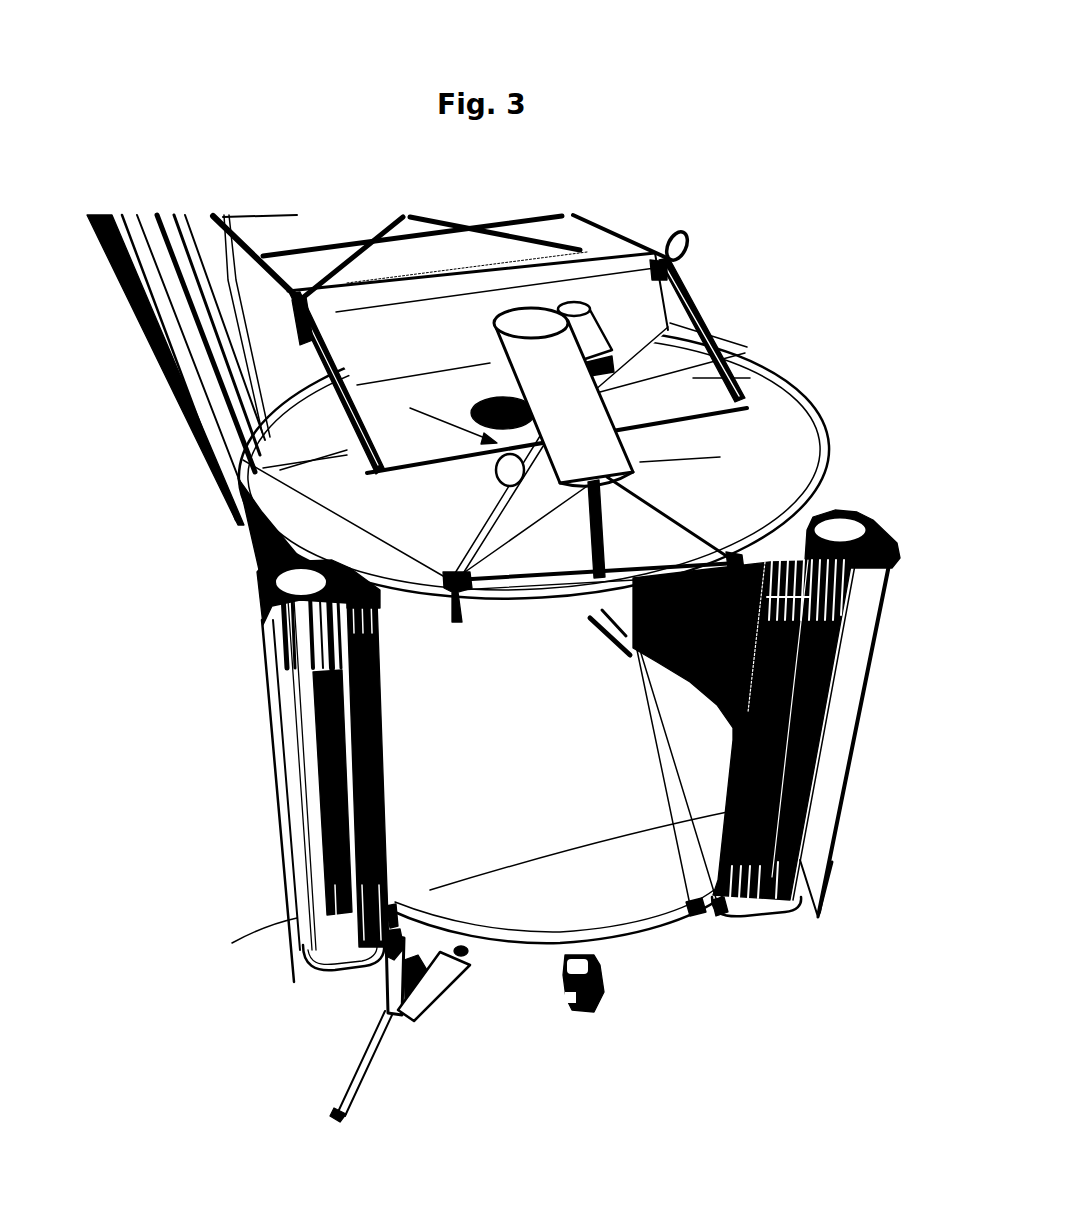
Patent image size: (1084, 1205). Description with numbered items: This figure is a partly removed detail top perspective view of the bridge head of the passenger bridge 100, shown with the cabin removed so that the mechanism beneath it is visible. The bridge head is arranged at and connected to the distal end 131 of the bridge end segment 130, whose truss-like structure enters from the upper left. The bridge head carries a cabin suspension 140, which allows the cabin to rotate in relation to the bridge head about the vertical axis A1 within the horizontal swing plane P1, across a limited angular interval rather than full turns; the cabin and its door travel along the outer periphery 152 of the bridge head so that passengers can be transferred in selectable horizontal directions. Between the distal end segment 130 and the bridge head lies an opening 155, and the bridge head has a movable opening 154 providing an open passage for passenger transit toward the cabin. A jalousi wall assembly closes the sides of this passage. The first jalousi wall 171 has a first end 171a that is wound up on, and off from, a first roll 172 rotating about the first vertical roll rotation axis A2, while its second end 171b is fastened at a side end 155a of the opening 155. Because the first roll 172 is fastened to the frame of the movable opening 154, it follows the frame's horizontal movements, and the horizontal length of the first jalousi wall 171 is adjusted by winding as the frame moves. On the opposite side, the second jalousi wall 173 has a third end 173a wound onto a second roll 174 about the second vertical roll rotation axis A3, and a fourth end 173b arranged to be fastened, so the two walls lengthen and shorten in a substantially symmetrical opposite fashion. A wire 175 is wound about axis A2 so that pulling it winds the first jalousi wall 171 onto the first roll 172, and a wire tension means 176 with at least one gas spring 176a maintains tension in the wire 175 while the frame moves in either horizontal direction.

The passenger bridge 100 is at (770, 268).
The bridge end segment 130 is at (143, 337).
The distal end 131 is at (668, 238).
The cabin suspension 140 is at (585, 398).
The outer periphery 152 is at (787, 370).
The movable opening 154 is at (663, 890).
The opening 155 is at (525, 650).
The side end 155a is at (697, 913).
The first jalousi wall 171 is at (300, 640).
The first end 171a is at (300, 919).
The second end 171b is at (263, 525).
The first roll 172 is at (330, 960).
The second jalousi wall 173 is at (822, 763).
The third end 173a is at (800, 877).
The fourth end 173b is at (743, 910).
The second roll 174 is at (793, 917).
The wire 175 is at (473, 957).
The wire tension means 176 is at (405, 1043).
The gas spring 176a is at (372, 1067).
The vertical axis A1 is at (531, 322).
The first vertical roll rotation axis A2 is at (302, 578).
The second vertical roll rotation axis A3 is at (838, 530).
The horizontal swing plane P1 is at (590, 1123).